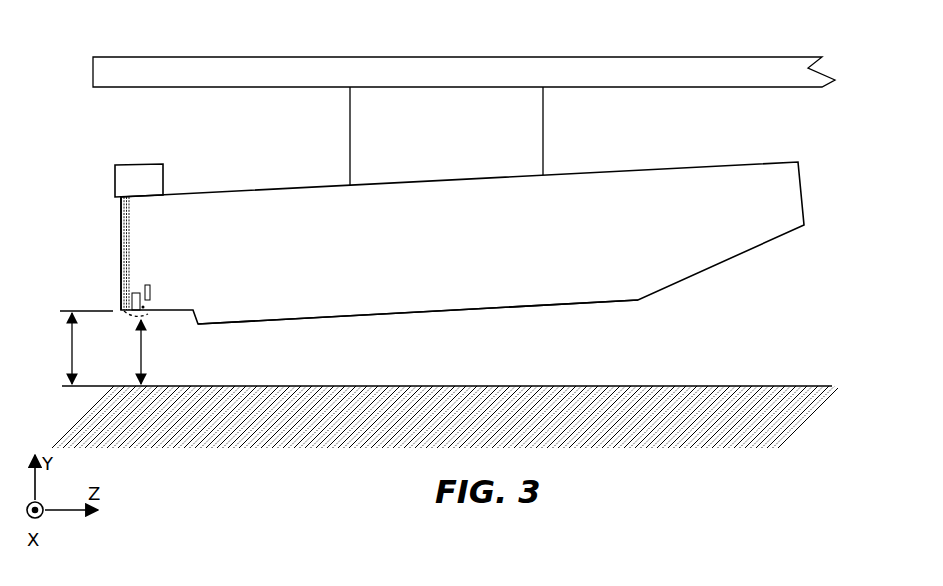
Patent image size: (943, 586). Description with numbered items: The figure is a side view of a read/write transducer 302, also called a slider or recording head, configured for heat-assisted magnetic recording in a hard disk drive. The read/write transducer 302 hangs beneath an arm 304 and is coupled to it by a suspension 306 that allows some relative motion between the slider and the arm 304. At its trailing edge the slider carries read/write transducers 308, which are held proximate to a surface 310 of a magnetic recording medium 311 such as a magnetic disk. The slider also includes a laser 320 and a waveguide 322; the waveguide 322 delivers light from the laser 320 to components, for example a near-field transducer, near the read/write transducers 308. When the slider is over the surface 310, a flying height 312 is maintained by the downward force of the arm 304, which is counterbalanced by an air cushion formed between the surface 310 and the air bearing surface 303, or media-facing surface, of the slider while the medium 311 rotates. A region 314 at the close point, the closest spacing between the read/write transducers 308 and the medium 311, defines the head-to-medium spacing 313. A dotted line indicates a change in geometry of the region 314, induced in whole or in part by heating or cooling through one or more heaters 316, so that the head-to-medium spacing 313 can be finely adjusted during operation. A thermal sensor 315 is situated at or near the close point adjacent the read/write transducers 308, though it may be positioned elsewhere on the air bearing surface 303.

The read/write transducer 302 is at (685, 177).
The air bearing surface 303 is at (302, 318).
The arm 304 is at (742, 63).
The suspension 306 is at (543, 125).
The read/write transducers 308 is at (132, 293).
The surface 310 is at (690, 386).
The magnetic recording medium 311 is at (705, 433).
The flying height 312 is at (70, 347).
The head-to-medium spacing 313 is at (119, 352).
The region 314 is at (147, 315).
The thermal sensor 315 is at (145, 307).
The heaters 316 is at (147, 285).
The laser 320 is at (140, 173).
The waveguide 322 is at (121, 230).